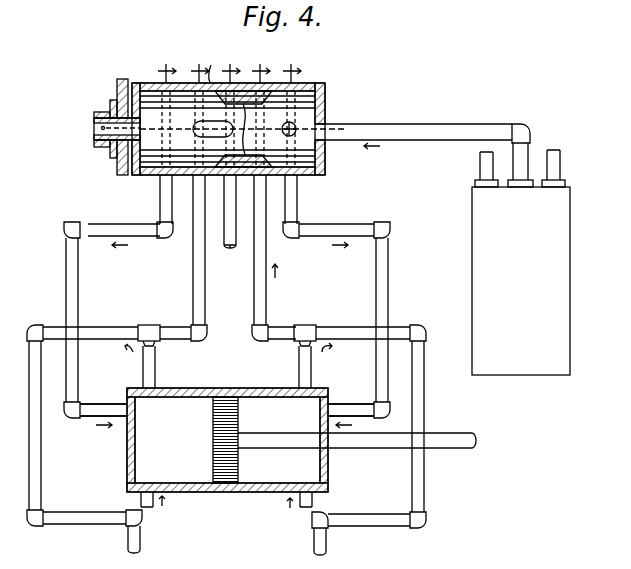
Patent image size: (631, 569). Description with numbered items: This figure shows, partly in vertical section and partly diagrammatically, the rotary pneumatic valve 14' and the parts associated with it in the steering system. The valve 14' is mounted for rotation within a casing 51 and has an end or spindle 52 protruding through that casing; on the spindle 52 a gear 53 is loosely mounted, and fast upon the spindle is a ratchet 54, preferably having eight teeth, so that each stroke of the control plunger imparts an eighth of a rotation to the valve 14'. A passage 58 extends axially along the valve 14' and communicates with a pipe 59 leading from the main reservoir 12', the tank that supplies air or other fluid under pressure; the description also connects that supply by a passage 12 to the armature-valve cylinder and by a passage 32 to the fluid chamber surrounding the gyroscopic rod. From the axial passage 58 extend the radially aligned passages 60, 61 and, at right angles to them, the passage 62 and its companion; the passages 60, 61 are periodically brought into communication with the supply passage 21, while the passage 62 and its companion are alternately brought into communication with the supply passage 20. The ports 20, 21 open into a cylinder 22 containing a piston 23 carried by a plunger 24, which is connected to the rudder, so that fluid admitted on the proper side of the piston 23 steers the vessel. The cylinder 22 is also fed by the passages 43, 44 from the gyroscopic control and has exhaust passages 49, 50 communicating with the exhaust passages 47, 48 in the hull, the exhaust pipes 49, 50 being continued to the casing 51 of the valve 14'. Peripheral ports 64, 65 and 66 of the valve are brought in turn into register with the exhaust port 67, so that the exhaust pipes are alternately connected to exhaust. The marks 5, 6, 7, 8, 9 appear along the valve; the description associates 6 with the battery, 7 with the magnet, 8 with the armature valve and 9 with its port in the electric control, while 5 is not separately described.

The valve port 5 is at (152, 200).
The battery 6 is at (193, 200).
The magnet 7 is at (224, 200).
The armature 8 is at (254, 200).
The port 9 is at (285, 200).
The passage 12 is at (472, 169).
The main reservoir 12' is at (503, 277).
The rotary pneumatic valve 14' is at (238, 115).
The supply passage 20 is at (350, 404).
The supply passage 21 is at (106, 404).
The cylinder 22 is at (192, 492).
The piston 23 is at (238, 490).
The plunger 24 is at (381, 448).
The passage 32 is at (560, 165).
The passage 43 is at (312, 500).
The passage 44 is at (141, 500).
The exhaust passage 47 is at (326, 546).
The exhaust passage 48 is at (127, 541).
The exhaust pipe 49 is at (193, 300).
The exhaust pipe 50 is at (266, 300).
The casing 51 is at (210, 83).
The spindle 52 is at (93, 128).
The gear 53 is at (123, 79).
The ratchet 54 is at (108, 108).
The axial passage 58 is at (338, 126).
The pipe 59 is at (442, 124).
The radial passage 60 is at (153, 90).
The radial passage 61 is at (140, 175).
The radial passage 62 is at (290, 122).
The peripheral port 64 is at (250, 91).
The peripheral port 65 is at (210, 123).
The peripheral port 66 is at (250, 124).
The exhaust port 67 is at (231, 245).